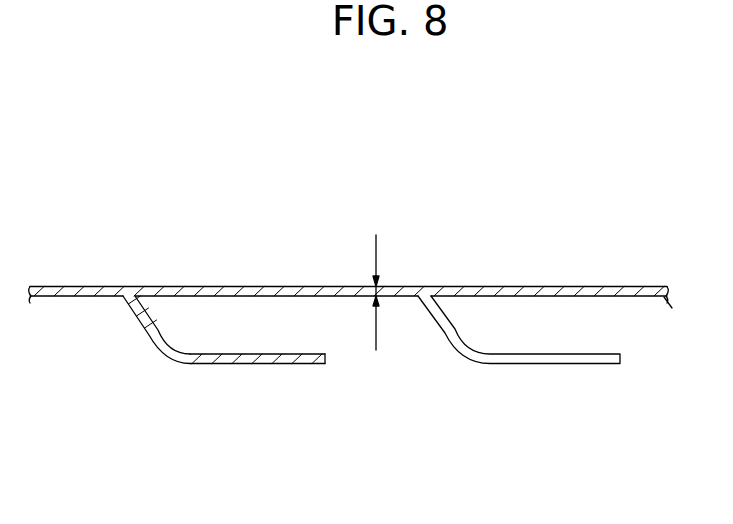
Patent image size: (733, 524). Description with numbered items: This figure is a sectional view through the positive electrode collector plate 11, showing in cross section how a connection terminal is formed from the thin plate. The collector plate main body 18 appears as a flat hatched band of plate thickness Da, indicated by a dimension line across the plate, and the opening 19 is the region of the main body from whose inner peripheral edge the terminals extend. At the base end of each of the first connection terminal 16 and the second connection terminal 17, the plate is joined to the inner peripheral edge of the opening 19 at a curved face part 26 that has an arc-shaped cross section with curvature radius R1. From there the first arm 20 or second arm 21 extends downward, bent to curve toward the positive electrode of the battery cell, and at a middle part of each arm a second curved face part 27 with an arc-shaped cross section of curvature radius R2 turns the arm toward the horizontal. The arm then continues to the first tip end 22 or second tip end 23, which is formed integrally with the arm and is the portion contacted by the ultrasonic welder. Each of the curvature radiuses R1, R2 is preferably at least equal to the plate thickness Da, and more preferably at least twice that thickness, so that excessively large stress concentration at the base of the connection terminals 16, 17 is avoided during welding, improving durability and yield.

The positive electrode collector plate 11 is at (458, 240).
The opening 19 is at (277, 286).
The collector plate main body 18 is at (624, 286).
The curved face part 26 is at (133, 286).
The second curved face part 27 is at (143, 337).
The curvature radius R1 is at (119, 302).
The curvature radius R2 is at (177, 336).
The first arm 20 is at (211, 406).
The second arm 21 is at (157, 357).
The first connection terminal 16 is at (257, 393).
The second connection terminal 17 is at (231, 364).
The first tip end 22 is at (320, 406).
The second tip end 23 is at (313, 366).
The plate thickness Da is at (372, 297).